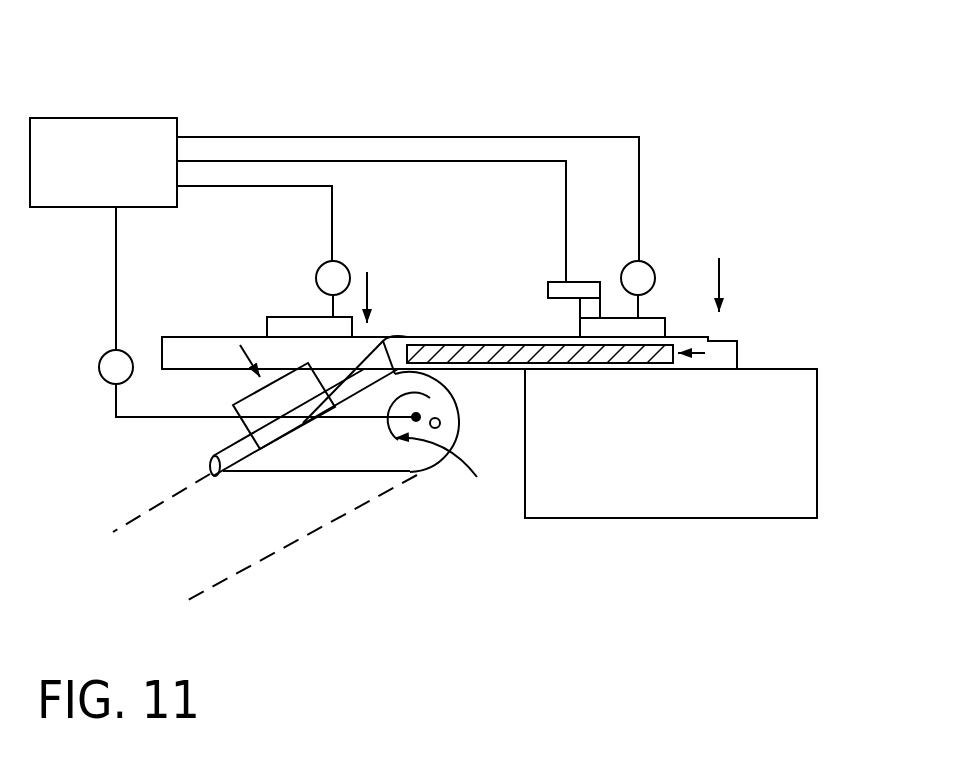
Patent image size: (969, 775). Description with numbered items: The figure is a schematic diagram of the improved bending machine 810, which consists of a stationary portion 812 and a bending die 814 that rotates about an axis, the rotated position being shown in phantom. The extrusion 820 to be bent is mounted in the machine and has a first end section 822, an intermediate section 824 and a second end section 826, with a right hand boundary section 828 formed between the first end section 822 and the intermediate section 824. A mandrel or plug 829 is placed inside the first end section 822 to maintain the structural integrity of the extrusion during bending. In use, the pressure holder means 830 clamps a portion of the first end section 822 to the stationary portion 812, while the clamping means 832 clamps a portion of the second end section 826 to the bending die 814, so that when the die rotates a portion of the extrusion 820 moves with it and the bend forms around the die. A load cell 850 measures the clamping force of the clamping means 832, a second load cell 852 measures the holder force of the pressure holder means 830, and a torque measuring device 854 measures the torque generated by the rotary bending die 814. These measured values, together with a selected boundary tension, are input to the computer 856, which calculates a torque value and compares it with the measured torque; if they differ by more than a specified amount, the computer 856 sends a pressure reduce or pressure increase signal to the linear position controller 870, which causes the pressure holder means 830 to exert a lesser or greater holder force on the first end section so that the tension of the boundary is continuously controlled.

The bending machine 810 is at (428, 102).
The stationary portion 812 is at (640, 500).
The bending die 814 is at (440, 475).
The extrusion 820 is at (737, 352).
The first end section 822 is at (710, 345).
The intermediate section 824 is at (388, 338).
The second end section 826 is at (217, 337).
The right hand boundary section 828 is at (405, 337).
The mandrel or plug 829 is at (575, 357).
The pressure holder means 830 is at (698, 270).
The clamping means 832 is at (283, 320).
The load cell 850 is at (338, 273).
The load cell 852 is at (651, 267).
The torque measuring device 854 is at (102, 362).
The computer 856 is at (135, 137).
The linear position controller 870 is at (598, 270).